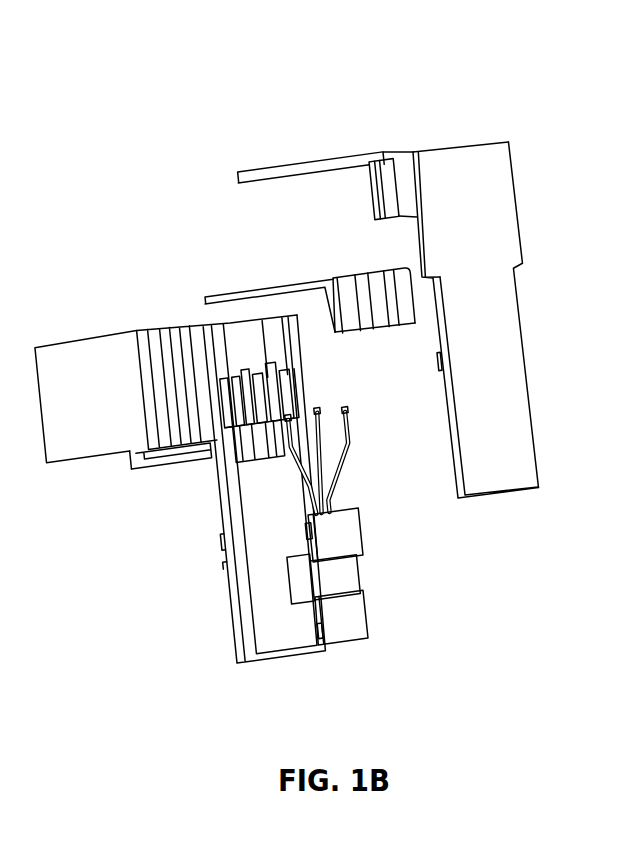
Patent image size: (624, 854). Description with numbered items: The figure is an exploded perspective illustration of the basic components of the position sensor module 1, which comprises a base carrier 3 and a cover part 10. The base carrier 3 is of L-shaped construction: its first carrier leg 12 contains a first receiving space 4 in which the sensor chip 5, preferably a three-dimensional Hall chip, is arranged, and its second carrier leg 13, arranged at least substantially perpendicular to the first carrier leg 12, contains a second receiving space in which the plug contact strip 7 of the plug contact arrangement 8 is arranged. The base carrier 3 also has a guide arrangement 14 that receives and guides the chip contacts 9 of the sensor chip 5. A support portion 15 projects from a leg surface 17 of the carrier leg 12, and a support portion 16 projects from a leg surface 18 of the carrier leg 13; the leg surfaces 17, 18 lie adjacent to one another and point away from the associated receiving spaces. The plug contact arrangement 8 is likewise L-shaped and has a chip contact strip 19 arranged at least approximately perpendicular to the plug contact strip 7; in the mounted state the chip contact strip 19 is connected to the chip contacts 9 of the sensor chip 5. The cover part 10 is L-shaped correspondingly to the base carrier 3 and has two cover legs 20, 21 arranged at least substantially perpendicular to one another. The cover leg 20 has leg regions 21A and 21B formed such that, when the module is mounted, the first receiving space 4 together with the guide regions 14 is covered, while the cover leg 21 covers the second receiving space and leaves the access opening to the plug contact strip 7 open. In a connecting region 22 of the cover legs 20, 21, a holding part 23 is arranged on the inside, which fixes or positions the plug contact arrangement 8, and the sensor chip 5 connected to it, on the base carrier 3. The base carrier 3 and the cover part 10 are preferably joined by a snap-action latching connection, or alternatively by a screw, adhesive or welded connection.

The position sensor module 1 is at (320, 376).
The base carrier 3 is at (75, 325).
The first receiving space 4 is at (278, 623).
The sensor chip 5 is at (382, 631).
The plug contact strip 7 is at (205, 291).
The plug contact arrangement 8 is at (385, 340).
The chip contacts 9 is at (356, 423).
The cover part 10 is at (386, 130).
The first carrier leg 12 is at (222, 518).
The second carrier leg 13 is at (58, 456).
The guide arrangement 14 is at (297, 398).
The support portion 15 is at (214, 568).
The support portion 16 is at (175, 463).
The leg surface 17 is at (219, 541).
The leg surface 18 is at (85, 457).
The chip contact strip 19 is at (347, 286).
The cover leg 20 is at (318, 155).
The cover leg 21 is at (503, 325).
The leg region 21A is at (497, 190).
The leg region 21B is at (503, 447).
The connecting region 22 is at (468, 141).
The holding part 23 is at (366, 198).